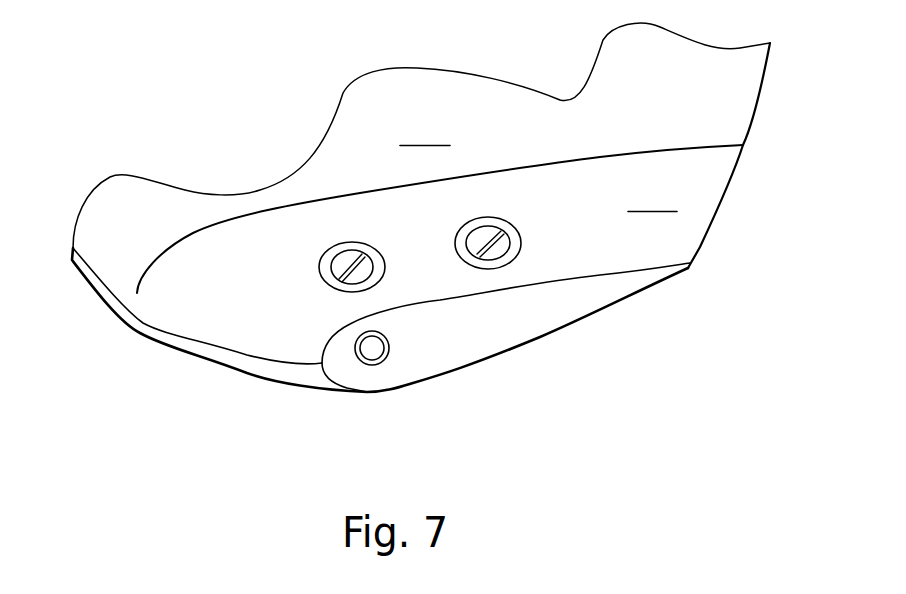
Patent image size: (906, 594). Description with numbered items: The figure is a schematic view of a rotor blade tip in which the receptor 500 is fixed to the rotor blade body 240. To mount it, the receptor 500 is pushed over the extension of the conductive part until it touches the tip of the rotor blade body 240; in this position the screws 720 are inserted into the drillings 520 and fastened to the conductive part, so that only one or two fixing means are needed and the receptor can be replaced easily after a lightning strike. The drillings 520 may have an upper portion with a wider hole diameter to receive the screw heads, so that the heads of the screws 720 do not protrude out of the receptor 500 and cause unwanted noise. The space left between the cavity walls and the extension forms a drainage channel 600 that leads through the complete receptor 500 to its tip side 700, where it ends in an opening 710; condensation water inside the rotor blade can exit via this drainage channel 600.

The rotor blade body 240 is at (421, 158).
The receptor 500 is at (421, 217).
The drillings 520 is at (352, 242).
The drainage channel 600 is at (368, 365).
The tip side 700 is at (525, 315).
The opening 710 is at (382, 362).
The screws 720 is at (357, 278).